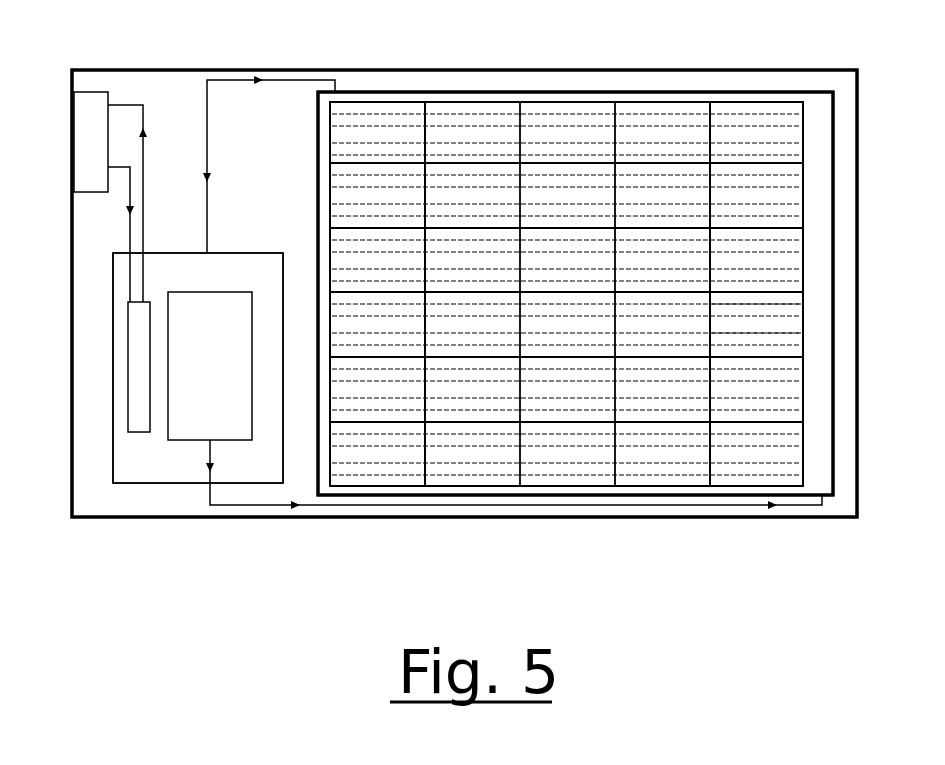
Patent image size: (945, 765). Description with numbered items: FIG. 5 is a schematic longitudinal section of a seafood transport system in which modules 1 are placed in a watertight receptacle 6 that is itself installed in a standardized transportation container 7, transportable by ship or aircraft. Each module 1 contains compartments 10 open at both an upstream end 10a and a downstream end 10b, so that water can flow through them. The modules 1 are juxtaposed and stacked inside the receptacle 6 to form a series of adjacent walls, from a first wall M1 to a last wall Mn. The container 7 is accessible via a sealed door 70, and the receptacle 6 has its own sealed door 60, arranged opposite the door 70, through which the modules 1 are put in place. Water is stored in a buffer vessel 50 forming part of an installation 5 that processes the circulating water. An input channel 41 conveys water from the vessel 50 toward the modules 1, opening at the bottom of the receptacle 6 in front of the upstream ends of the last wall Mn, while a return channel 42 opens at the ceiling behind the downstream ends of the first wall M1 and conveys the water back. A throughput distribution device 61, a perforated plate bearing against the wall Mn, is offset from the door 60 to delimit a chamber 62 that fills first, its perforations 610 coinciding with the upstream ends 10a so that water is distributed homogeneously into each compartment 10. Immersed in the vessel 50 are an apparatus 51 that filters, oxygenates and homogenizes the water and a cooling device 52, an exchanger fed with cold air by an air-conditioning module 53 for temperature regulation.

The module 1 is at (737, 97).
The compartment 10 is at (598, 110).
The upstream end 10a is at (797, 115).
The downstream end 10b is at (317, 118).
The installation 5 is at (107, 447).
The buffer vessel 50 is at (128, 483).
The apparatus 51 is at (183, 440).
The cooling device 52 is at (128, 350).
The air-conditioning module 53 is at (72, 140).
The receptacle 6 is at (490, 92).
The transportation container 7 is at (428, 70).
The input channel 41 is at (478, 505).
The return channel 42 is at (297, 70).
The sealed door of the receptacle 60 is at (835, 163).
The throughput distribution device 61 is at (808, 488).
The chamber 62 is at (817, 250).
The sealed door of the container 70 is at (858, 115).
The perforations 610 is at (807, 337).
The first wall M1 is at (365, 488).
The last wall Mn is at (755, 487).